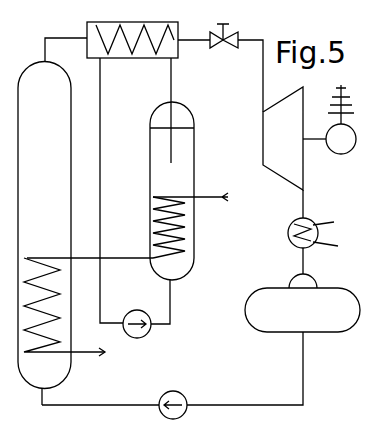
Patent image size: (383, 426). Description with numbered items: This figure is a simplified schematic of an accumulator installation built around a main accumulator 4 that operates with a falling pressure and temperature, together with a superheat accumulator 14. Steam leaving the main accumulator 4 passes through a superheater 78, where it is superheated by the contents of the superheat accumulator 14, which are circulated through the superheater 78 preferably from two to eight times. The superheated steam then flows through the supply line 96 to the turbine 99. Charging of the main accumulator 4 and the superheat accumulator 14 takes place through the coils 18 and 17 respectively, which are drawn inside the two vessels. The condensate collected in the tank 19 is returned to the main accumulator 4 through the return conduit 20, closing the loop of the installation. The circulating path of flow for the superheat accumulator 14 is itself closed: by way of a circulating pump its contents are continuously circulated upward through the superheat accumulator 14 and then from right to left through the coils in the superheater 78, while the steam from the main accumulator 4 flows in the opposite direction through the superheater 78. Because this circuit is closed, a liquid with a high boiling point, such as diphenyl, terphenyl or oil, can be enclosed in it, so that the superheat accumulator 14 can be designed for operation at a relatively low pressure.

The main accumulator 4 is at (48, 108).
The superheat accumulator 14 is at (163, 120).
The coil 17 is at (160, 245).
The coil 18 is at (57, 268).
The tank 19 is at (245, 318).
The return conduit 20 is at (303, 387).
The superheater 78 is at (88, 37).
The supply line 96 is at (263, 77).
The turbine 99 is at (275, 117).